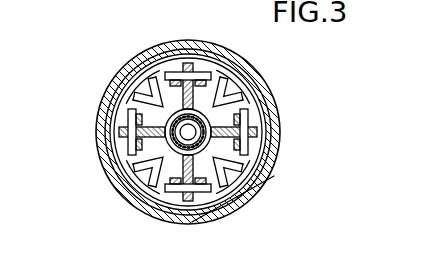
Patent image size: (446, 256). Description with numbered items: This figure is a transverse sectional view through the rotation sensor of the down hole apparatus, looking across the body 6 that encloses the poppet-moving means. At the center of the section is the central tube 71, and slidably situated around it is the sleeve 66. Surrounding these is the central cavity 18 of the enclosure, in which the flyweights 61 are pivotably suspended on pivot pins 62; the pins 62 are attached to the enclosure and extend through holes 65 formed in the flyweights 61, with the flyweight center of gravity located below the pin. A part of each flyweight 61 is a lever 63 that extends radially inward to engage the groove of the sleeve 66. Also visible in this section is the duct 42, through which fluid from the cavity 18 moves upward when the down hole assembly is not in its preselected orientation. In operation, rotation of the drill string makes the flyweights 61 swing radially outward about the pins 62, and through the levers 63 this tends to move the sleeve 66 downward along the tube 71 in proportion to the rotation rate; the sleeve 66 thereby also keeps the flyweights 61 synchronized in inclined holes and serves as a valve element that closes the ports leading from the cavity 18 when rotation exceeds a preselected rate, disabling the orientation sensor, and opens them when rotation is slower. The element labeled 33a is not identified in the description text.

The body 6 is at (278, 106).
The central cavity 18 is at (143, 90).
The central tube 71 is at (177, 128).
The lever 63 is at (197, 87).
The sleeve 66 is at (195, 97).
The pivot pins 62 is at (248, 145).
The wedge band 33a is at (228, 167).
The holes 65 is at (185, 200).
The flyweights 61 is at (172, 178).
The duct 42 is at (161, 152).